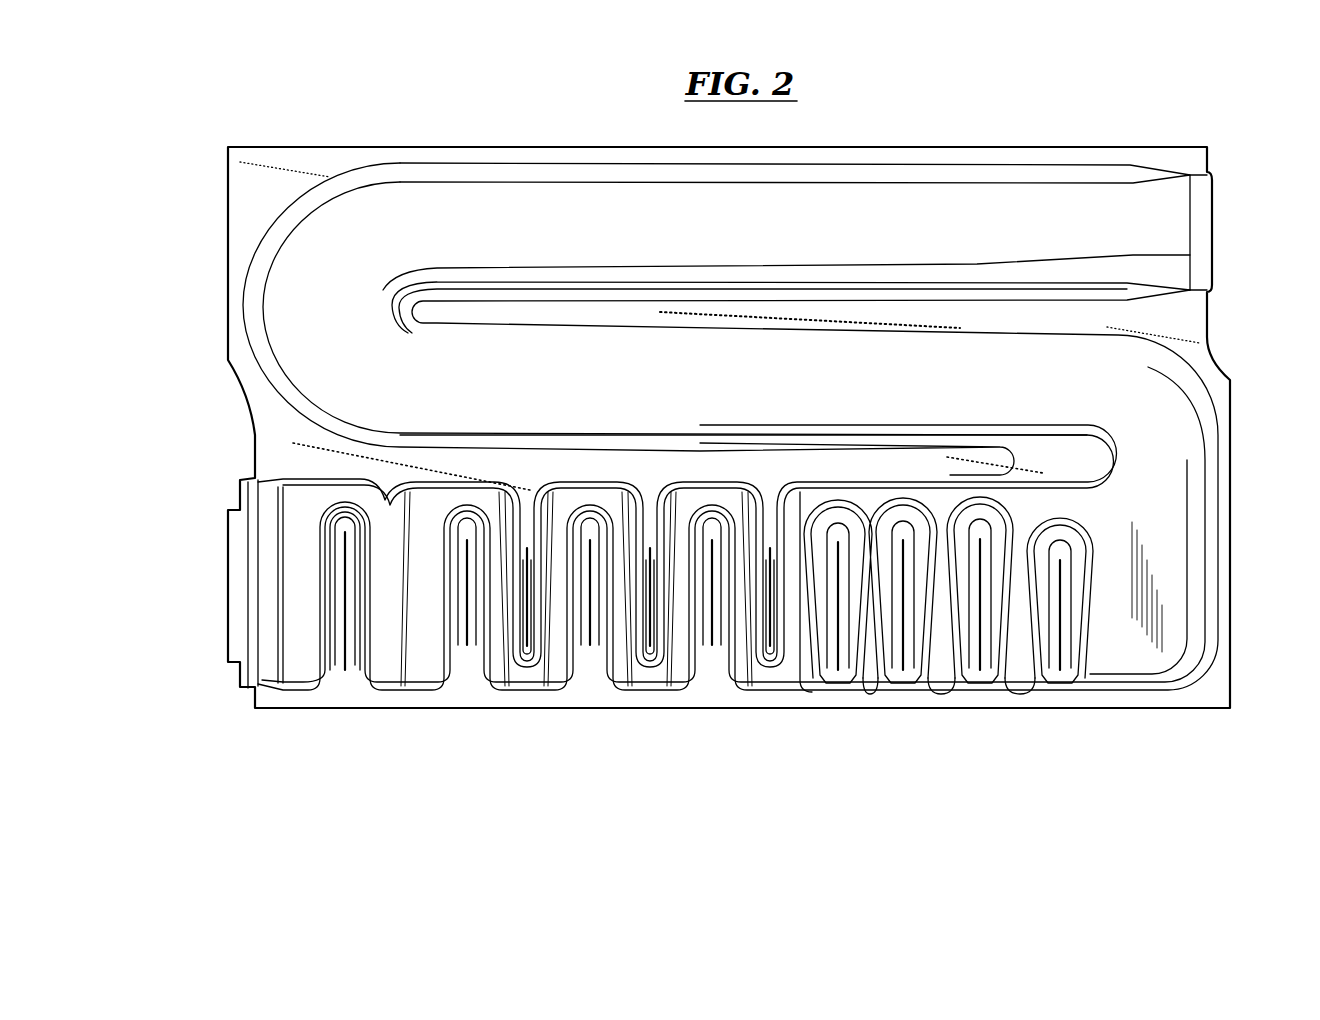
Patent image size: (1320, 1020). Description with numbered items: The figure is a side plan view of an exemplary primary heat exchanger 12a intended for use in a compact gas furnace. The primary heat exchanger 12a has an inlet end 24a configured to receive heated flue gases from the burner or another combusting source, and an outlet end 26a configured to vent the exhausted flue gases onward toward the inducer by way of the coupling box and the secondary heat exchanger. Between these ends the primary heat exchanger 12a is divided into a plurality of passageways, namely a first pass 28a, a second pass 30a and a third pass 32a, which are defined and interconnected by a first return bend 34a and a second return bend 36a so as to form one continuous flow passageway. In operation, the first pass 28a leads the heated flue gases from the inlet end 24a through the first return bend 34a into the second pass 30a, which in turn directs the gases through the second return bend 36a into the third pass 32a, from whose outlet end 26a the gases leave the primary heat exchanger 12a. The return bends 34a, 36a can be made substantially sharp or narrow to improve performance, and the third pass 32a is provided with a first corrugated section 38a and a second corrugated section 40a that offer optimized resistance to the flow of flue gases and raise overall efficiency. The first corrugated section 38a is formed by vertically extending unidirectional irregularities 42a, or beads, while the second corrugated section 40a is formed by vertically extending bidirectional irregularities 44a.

The primary heat exchanger 12a is at (1107, 104).
The inlet end 24a is at (1207, 212).
The outlet end 26a is at (265, 557).
The first pass 28a is at (906, 232).
The second pass 30a is at (688, 380).
The third pass 32a is at (300, 518).
The first return bend 34a is at (318, 322).
The second return bend 36a is at (1150, 428).
The first corrugated section 38a is at (830, 723).
The second corrugated section 40a is at (820, 723).
The unidirectional irregularities 42a is at (980, 610).
The bidirectional irregularities 44a is at (467, 652).